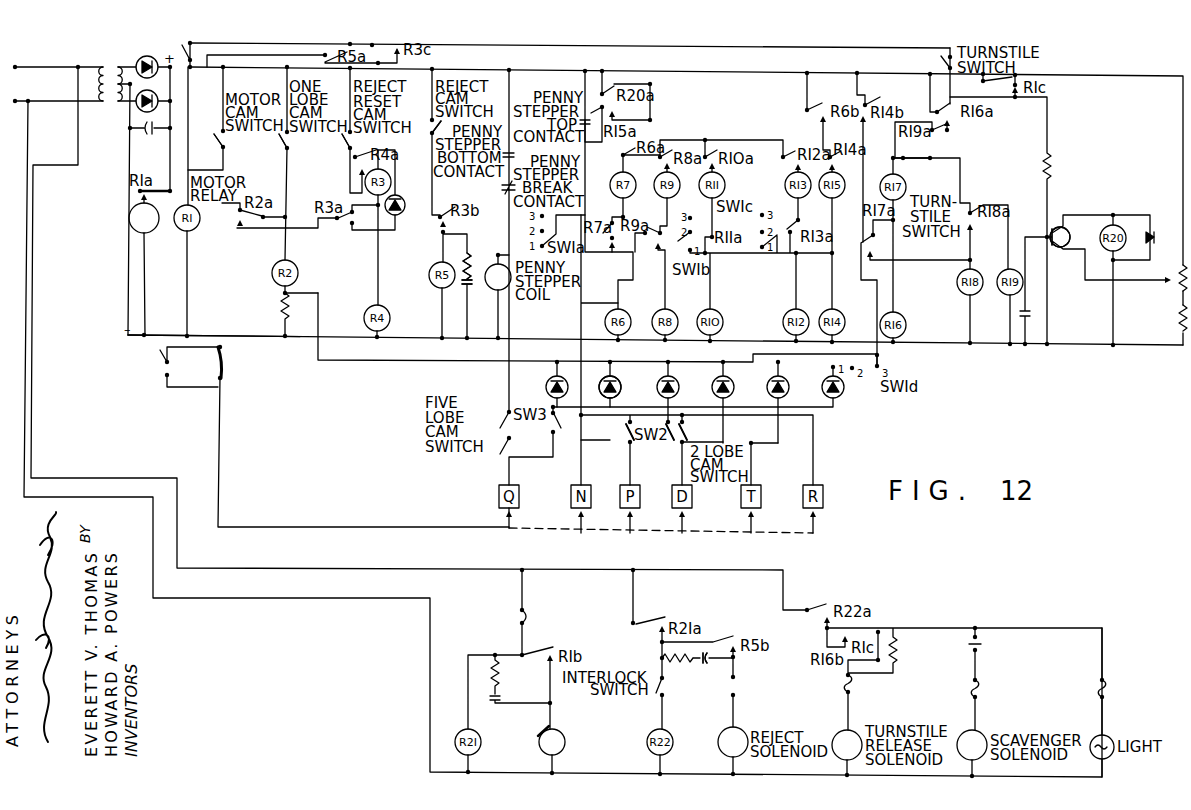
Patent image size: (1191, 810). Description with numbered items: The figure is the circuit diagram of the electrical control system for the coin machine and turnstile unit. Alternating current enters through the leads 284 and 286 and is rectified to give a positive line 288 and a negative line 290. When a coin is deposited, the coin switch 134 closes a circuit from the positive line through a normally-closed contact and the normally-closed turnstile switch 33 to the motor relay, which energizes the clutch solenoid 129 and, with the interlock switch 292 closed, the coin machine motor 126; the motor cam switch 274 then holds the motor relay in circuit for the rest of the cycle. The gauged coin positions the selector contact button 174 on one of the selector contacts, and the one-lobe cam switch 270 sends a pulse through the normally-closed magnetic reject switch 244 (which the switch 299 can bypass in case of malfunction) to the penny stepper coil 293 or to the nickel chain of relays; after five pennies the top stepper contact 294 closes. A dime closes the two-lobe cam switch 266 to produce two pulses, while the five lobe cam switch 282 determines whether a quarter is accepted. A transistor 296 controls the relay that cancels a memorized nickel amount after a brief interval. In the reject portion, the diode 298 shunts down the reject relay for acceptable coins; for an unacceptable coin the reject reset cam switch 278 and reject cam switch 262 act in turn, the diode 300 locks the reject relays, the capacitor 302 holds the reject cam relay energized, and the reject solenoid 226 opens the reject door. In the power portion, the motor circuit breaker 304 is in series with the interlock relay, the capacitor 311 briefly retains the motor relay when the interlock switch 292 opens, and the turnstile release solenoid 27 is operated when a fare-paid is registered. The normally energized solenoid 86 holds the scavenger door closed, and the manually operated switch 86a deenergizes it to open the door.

The lead 284 is at (60, 66).
The lead 286 is at (28, 100).
The positive line 288 is at (172, 62).
The coin switch 134 is at (189, 43).
The motor cam switch 274 is at (221, 133).
The one-lobe cam switch 270 is at (281, 141).
The reject reset cam switch 278 is at (344, 138).
The reject cam switch 262 is at (431, 123).
The diode 300 is at (398, 197).
The clutch solenoid 129 is at (134, 229).
The negative line 290 is at (131, 337).
The switch 299 is at (160, 365).
The magnetic reject switch 244 is at (215, 388).
The penny stepper coil 293 is at (470, 257).
The capacitor 302 is at (472, 288).
The top stepper contact 294 is at (600, 140).
The turnstile switch 33 is at (948, 58).
The transistor 296 is at (1053, 229).
The diode 298 is at (606, 376).
The five lobe cam switch 282 is at (503, 453).
The selector contact button 174 is at (506, 517).
The two-lobe cam switch 266 is at (684, 443).
The motor circuit breaker 304 is at (531, 618).
The capacitor 311 is at (702, 664).
The interlock switch 292 is at (665, 694).
The coin machine motor 126 is at (540, 750).
The reject solenoid 226 is at (719, 751).
The turnstile release solenoid 27 is at (833, 754).
The manually operated switch 86a is at (982, 646).
The solenoid 86 is at (985, 756).